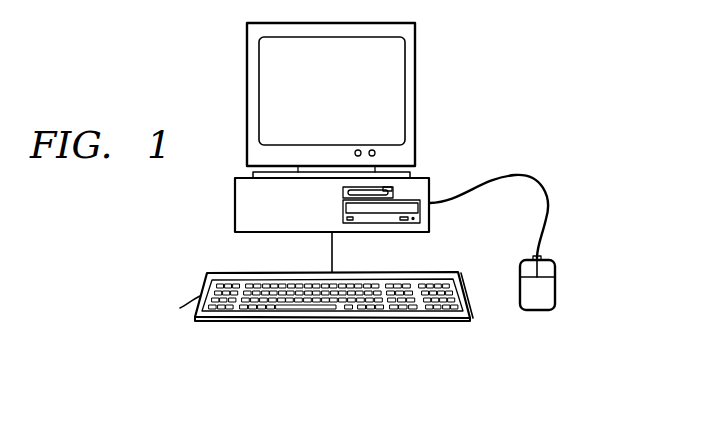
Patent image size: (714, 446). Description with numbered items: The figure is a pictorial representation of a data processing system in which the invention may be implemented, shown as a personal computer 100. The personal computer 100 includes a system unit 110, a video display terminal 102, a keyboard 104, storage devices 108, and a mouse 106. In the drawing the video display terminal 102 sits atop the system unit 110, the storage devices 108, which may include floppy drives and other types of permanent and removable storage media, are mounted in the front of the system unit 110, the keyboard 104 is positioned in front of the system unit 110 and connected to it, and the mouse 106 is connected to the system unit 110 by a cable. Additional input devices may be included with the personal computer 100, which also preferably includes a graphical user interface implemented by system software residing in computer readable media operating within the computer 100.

The personal computer 100 is at (491, 69).
The video display terminal 102 is at (247, 93).
The keyboard 104 is at (200, 295).
The mouse 106 is at (560, 285).
The storage devices 108 is at (343, 205).
The system unit 110 is at (235, 203).